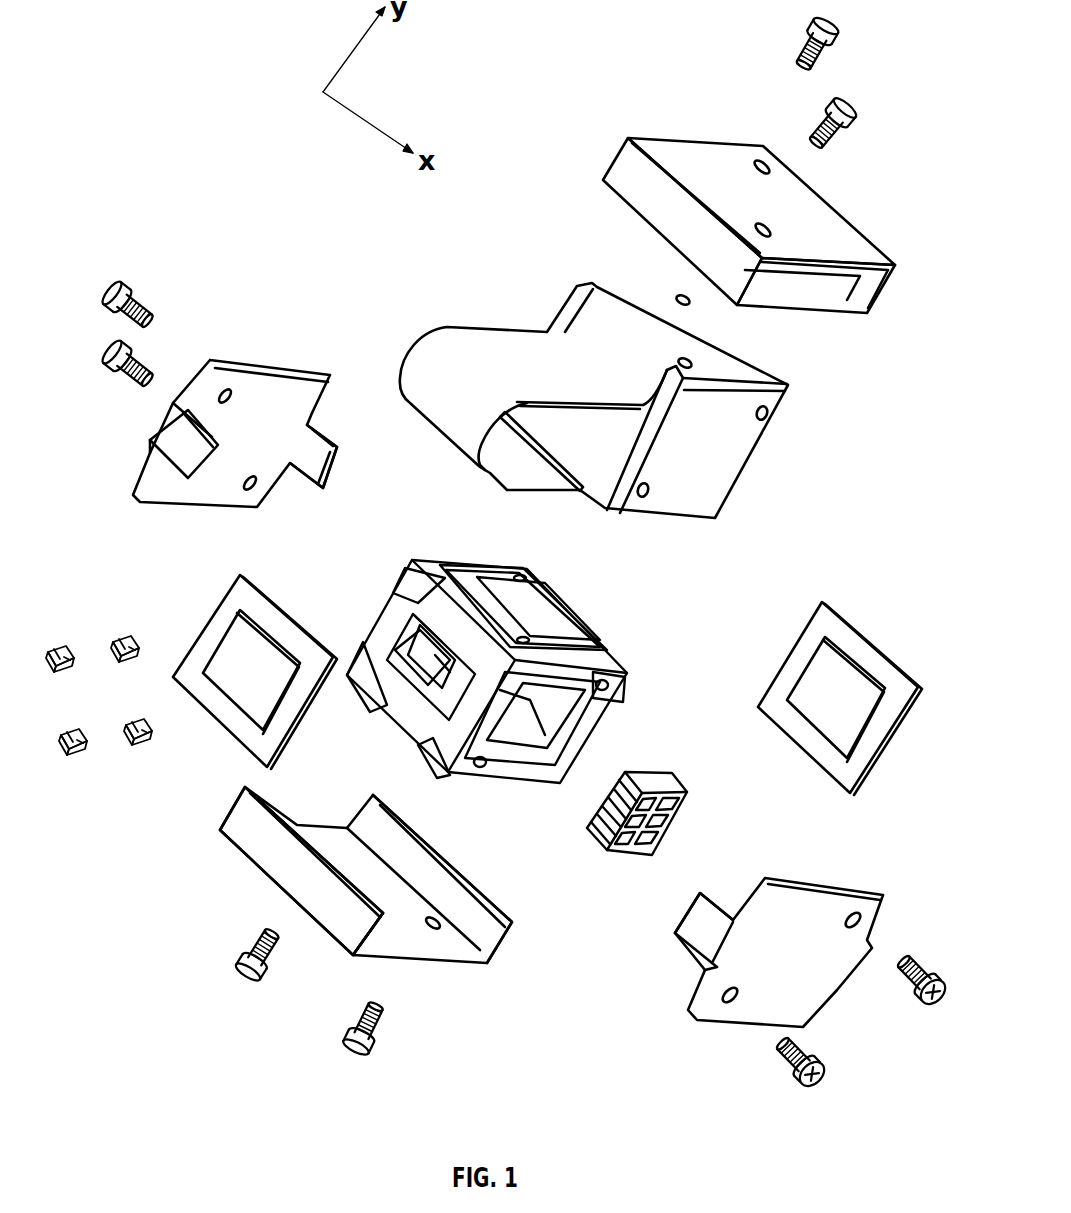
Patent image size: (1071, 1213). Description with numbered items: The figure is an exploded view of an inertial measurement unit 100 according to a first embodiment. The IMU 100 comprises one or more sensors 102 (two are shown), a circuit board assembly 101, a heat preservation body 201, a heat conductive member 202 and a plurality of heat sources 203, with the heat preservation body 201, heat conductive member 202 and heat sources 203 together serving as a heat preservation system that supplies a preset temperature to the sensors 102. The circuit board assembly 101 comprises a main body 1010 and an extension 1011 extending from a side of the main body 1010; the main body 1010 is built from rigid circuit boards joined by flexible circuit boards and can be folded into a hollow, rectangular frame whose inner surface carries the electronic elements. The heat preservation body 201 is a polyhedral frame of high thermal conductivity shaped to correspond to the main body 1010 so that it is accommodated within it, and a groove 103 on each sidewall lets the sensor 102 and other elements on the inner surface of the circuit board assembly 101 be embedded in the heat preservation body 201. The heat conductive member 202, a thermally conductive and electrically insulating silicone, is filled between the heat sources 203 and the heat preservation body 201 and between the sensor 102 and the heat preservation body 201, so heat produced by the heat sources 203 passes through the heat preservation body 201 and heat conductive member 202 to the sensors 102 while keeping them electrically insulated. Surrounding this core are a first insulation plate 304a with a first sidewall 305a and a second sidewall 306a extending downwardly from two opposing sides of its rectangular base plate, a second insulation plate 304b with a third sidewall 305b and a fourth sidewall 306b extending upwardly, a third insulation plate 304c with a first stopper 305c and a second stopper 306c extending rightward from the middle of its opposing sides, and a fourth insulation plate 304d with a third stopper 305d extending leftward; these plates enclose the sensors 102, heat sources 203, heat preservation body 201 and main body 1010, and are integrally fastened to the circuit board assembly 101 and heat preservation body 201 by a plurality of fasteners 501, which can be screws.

The inertial measurement unit 100 is at (594, 448).
The circuit board assembly 101 is at (665, 498).
The main body 1010 is at (711, 474).
The extension 1011 is at (543, 478).
The sensor 102 is at (502, 600).
The groove 103 is at (528, 745).
The heat preservation body 201 is at (571, 687).
The heat conductive member 202 is at (222, 620).
The heat source 203 is at (125, 745).
The first insulation plate 304a is at (730, 232).
The first sidewall 305a is at (670, 200).
The second sidewall 306a is at (872, 295).
The second insulation plate 304b is at (361, 913).
The third sidewall 305b is at (275, 853).
The fourth sidewall 306b is at (495, 933).
The third insulation plate 304c is at (202, 430).
The first stopper 305c is at (175, 438).
The second stopper 306c is at (327, 490).
The fourth insulation plate 304d is at (763, 984).
The third stopper 305d is at (700, 933).
The fastener 501 is at (825, 50).